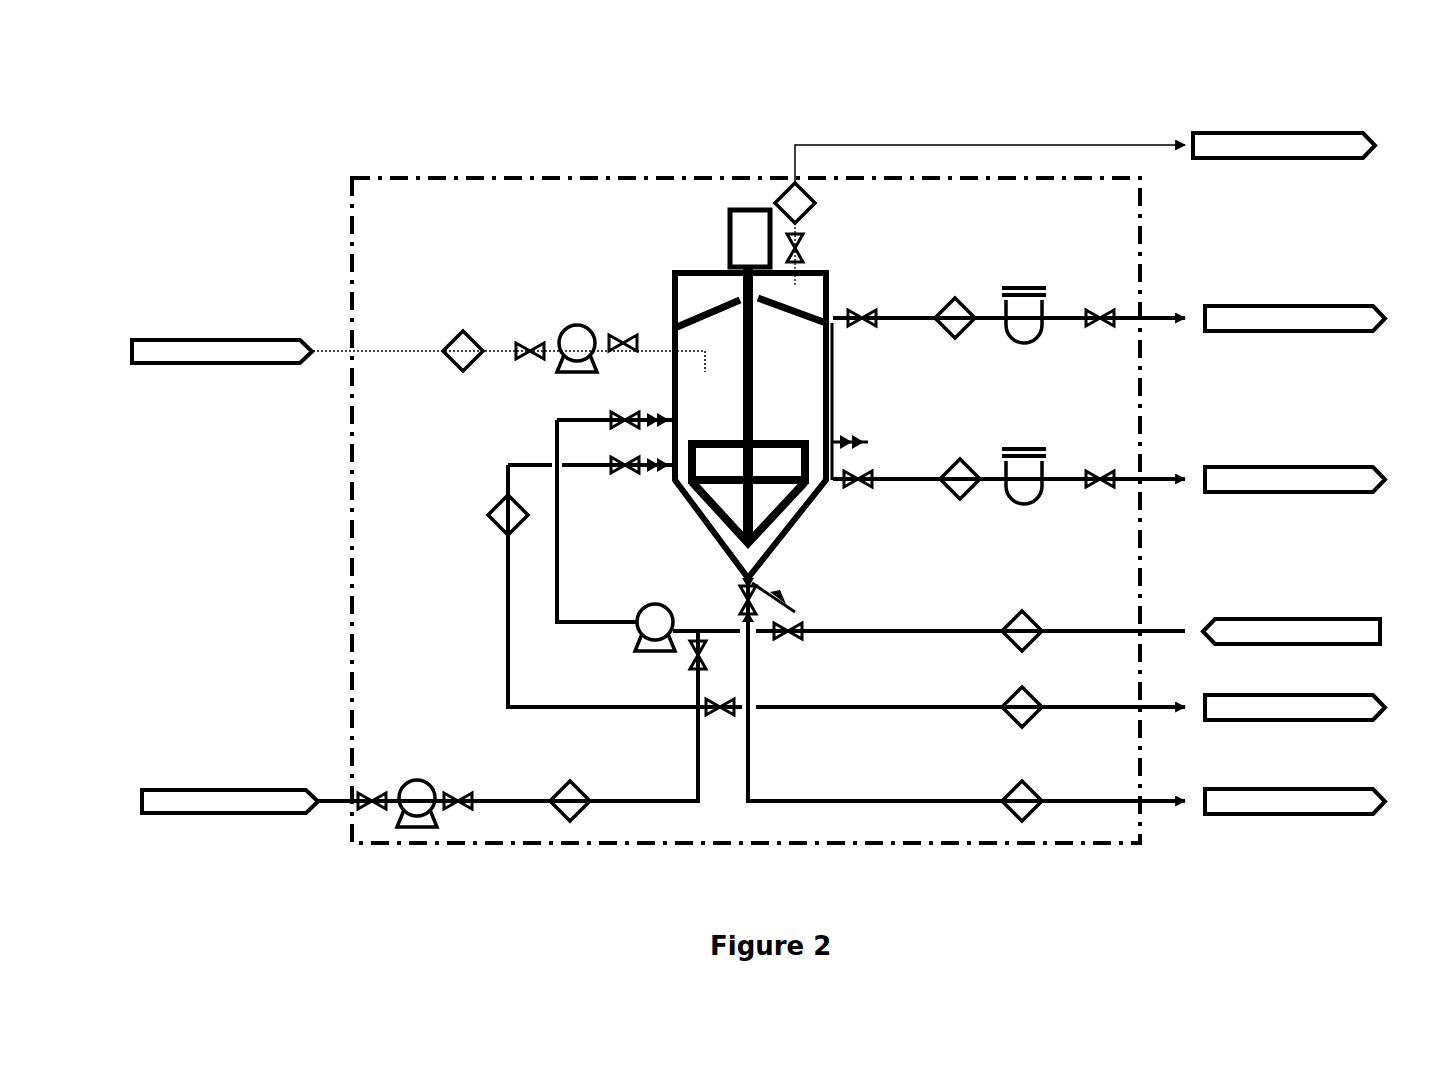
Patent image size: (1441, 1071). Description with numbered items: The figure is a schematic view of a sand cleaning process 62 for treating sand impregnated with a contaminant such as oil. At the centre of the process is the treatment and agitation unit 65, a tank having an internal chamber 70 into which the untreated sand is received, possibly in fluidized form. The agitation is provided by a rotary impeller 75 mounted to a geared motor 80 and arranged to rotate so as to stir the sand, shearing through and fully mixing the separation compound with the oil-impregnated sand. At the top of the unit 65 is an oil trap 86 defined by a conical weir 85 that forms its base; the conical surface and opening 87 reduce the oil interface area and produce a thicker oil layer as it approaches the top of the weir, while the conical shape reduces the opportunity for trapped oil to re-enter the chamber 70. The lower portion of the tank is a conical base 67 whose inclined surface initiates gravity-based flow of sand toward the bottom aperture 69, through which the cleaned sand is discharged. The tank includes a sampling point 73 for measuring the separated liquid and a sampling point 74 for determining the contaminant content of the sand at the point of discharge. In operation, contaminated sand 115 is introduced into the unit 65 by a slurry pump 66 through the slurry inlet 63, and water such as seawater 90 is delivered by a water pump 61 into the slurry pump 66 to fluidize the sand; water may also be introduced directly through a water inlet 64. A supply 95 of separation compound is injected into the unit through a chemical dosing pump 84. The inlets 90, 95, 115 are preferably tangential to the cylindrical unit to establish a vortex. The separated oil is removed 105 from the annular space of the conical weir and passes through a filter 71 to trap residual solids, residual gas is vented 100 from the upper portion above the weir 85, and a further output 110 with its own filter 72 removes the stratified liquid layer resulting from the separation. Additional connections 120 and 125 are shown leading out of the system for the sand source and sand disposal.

The sand cleaning process 62 is at (237, 118).
The water pump 61 is at (400, 787).
The slurry inlet 63 is at (615, 415).
The water inlet 64 is at (615, 462).
The treatment and agitation unit 65 is at (707, 537).
The slurry pump 66 is at (632, 632).
The conical base 67 is at (577, 527).
The bottom aperture 69 is at (745, 582).
The internal chamber 70 is at (776, 368).
The filter 71 is at (1040, 292).
The filter 72 is at (1045, 460).
The sampling point 73 is at (847, 452).
The sampling point 74 is at (780, 600).
The rotary impeller 75 is at (812, 440).
The geared motor 80 is at (730, 226).
The chemical dosing pump 84 is at (552, 330).
The conical weir 85 is at (690, 310).
The oil trap 86 is at (698, 297).
The conical surface opening 87 is at (738, 298).
The water introduction 90 is at (399, 726).
The separation compound supply 95 is at (393, 345).
The gas vent 100 is at (1100, 199).
The separated oil removal 105 is at (1141, 314).
The stratified liquid output 110 is at (1139, 476).
The contaminated sand supply 115 is at (1218, 623).
The sand source outlet 120 is at (1218, 697).
The sand disposal outlet 125 is at (1220, 797).